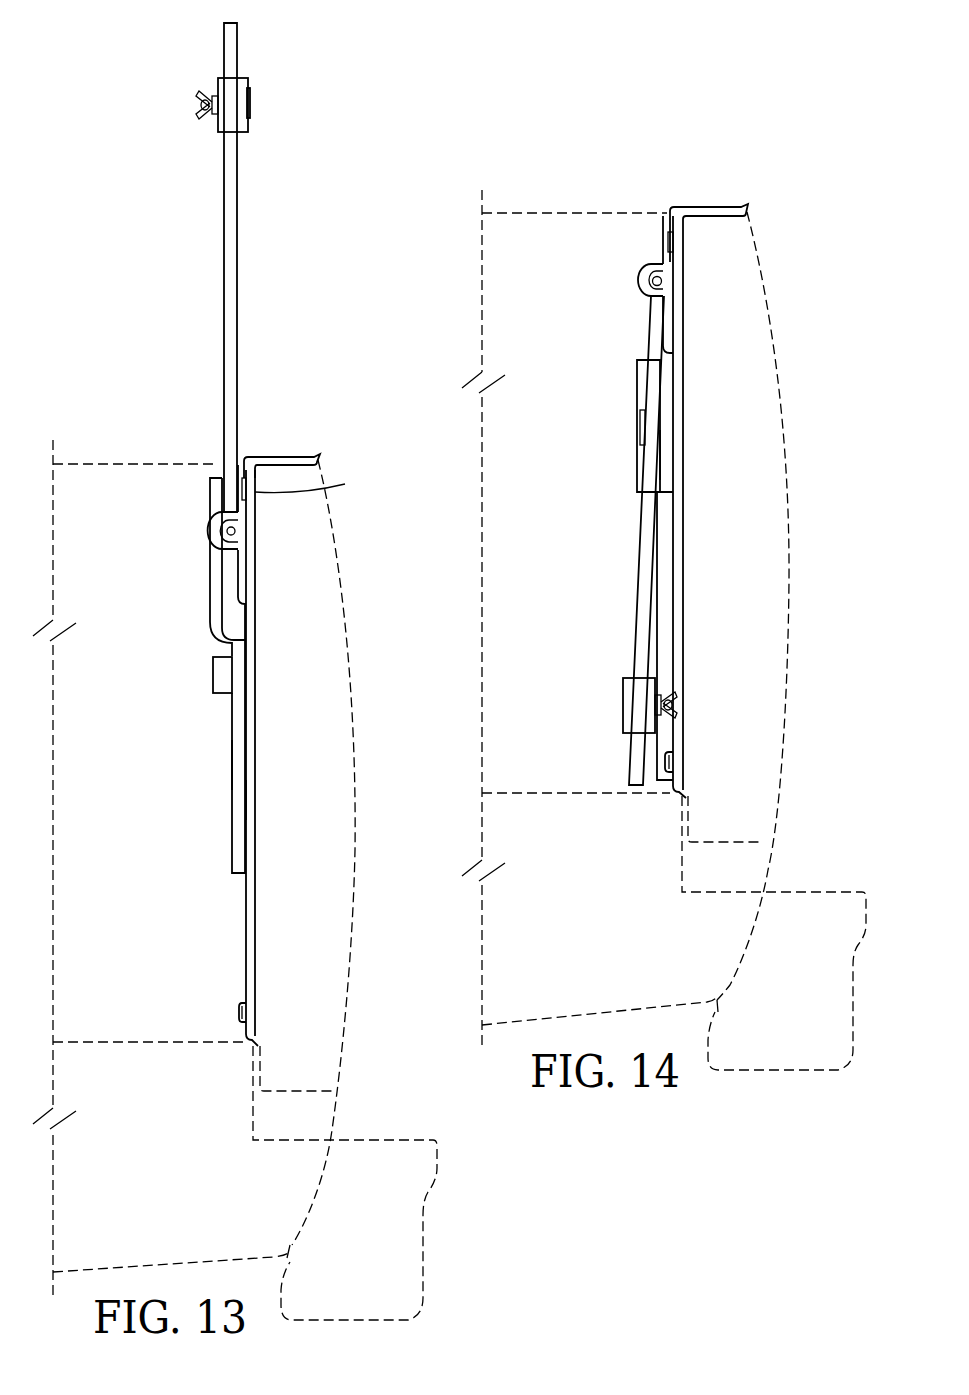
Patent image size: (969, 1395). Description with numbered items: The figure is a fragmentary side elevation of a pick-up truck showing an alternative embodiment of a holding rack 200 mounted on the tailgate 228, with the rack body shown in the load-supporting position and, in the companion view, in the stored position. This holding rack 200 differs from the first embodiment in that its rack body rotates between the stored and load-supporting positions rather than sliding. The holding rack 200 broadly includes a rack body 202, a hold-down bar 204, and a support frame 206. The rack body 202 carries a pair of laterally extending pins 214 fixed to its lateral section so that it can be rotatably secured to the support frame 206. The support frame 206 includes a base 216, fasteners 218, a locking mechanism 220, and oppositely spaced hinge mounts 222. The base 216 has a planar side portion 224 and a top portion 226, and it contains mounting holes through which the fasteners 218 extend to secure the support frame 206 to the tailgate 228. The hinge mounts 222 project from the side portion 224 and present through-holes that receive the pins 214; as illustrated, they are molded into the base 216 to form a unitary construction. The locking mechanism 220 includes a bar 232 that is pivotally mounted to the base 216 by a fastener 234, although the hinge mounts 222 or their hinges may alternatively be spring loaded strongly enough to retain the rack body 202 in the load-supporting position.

In FIG. 13, the holding rack 200 is at (316, 103).
In FIG. 13, the rack body 202 is at (224, 388).
In FIG. 14, the rack body 202 is at (636, 585).
In FIG. 13, the hold-down bar 204 is at (220, 133).
In FIG. 14, the hold-down bar 204 is at (623, 680).
In FIG. 13, the support frame 206 is at (245, 720).
In FIG. 14, the support frame 206 is at (672, 524).
In FIG. 13, the laterally extending pins 214 is at (222, 530).
In FIG. 14, the laterally extending pins 214 is at (645, 280).
In FIG. 13, the base 216 is at (258, 490).
In FIG. 14, the base 216 is at (679, 507).
In FIG. 13, the fasteners 218 is at (240, 1010).
In FIG. 14, the fasteners 218 is at (669, 762).
In FIG. 13, the locking mechanism 220 is at (210, 612).
In FIG. 14, the locking mechanism 220 is at (637, 385).
In FIG. 13, the hinge mounts 222 is at (238, 574).
In FIG. 14, the hinge mounts 222 is at (665, 242).
In FIG. 13, the side portion 224 is at (248, 800).
In FIG. 13, the top portion 226 is at (284, 455).
In FIG. 14, the top portion 226 is at (709, 233).
In FIG. 13, the tailgate 228 is at (330, 570).
In FIG. 14, the tailgate 228 is at (752, 318).
In FIG. 13, the bar 232 is at (232, 760).
In FIG. 14, the bar 232 is at (658, 455).
In FIG. 13, the fastener 234 is at (213, 677).